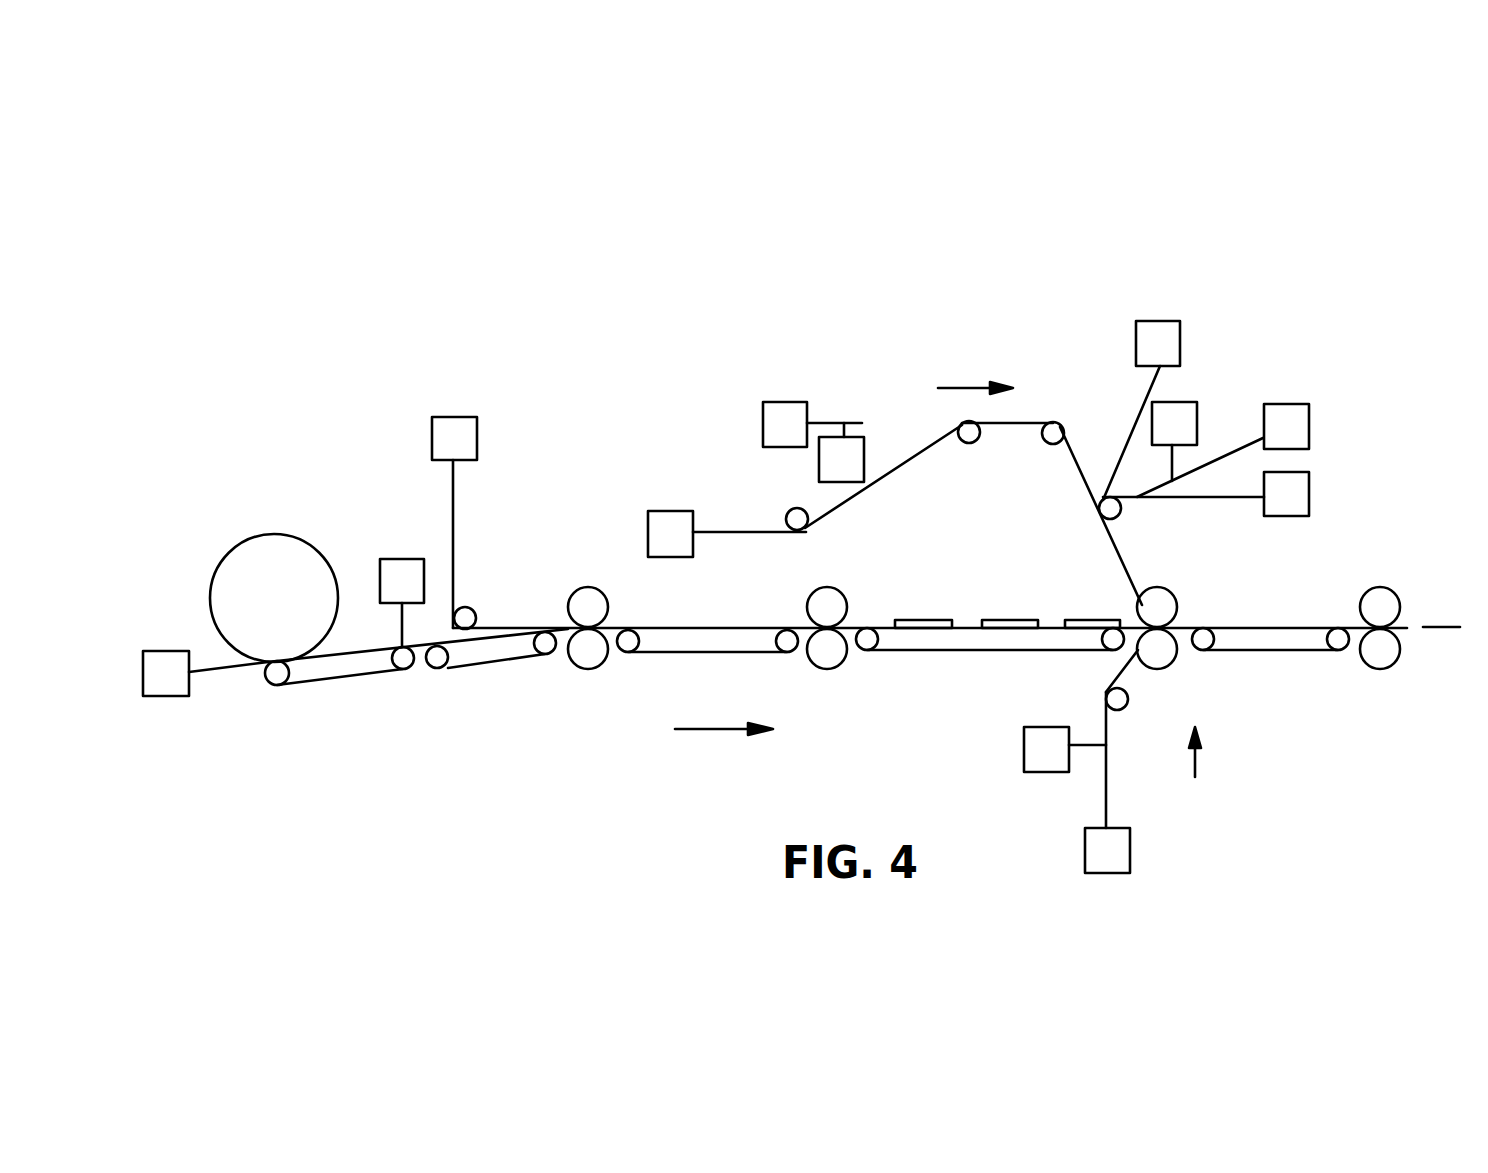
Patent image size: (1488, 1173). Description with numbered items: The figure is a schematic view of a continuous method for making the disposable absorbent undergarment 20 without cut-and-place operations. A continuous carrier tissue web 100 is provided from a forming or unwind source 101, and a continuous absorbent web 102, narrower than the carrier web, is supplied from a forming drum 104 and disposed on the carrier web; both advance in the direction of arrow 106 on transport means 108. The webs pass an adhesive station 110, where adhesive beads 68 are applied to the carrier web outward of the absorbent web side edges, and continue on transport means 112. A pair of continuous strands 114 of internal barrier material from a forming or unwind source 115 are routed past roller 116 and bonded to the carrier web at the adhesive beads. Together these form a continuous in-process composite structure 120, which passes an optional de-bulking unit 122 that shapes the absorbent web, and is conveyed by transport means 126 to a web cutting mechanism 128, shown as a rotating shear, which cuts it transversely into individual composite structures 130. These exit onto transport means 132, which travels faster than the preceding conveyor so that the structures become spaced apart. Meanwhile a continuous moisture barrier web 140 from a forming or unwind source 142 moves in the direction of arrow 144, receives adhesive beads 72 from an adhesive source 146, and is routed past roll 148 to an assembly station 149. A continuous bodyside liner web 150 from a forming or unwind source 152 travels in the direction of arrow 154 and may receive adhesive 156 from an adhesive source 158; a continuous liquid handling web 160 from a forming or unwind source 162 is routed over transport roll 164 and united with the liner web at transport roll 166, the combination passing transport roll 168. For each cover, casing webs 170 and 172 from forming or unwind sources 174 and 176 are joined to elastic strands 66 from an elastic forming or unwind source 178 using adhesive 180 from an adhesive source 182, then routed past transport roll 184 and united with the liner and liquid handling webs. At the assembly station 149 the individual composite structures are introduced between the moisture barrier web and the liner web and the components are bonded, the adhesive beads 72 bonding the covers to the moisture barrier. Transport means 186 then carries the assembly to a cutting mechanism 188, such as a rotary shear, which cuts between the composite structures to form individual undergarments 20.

The undergarment 20 is at (1438, 622).
The elastic strands 66 is at (1252, 432).
The adhesive beads 68 is at (397, 632).
The adhesive beads 72 is at (1090, 747).
The carrier tissue web 100 is at (212, 675).
The forming or unwind source 101 is at (167, 687).
The absorbent web 102 is at (260, 667).
The forming drum 104 is at (235, 545).
The arrow 106 is at (710, 732).
The transport means 108 is at (365, 672).
The adhesive station 110 is at (398, 566).
The transport means 112 is at (500, 658).
The continuous strands 114 is at (455, 530).
The forming or unwind source 115 is at (458, 424).
The roller 116 is at (474, 614).
The composite structure 120 is at (717, 628).
The de-bulking unit 122 is at (590, 668).
The transport means 126 is at (682, 657).
The web cutting mechanism 128 is at (832, 587).
The composite structures 130 is at (945, 620).
The transport means 132 is at (950, 650).
The moisture barrier web 140 is at (1108, 797).
The forming or unwind source 142 is at (1115, 863).
The arrow 144 is at (1197, 765).
The adhesive source 146 is at (1014, 758).
The roll 148 is at (1130, 697).
The assembly station 149 is at (1177, 593).
The bodyside liner web 150 is at (830, 422).
The forming or unwind source 152 is at (780, 412).
The arrow 154 is at (960, 388).
The adhesive 156 is at (860, 428).
The adhesive source 158 is at (862, 463).
The liquid handling web 160 is at (740, 530).
The forming or unwind source 162 is at (663, 521).
The transport roll 164 is at (790, 508).
The transport roll 166 is at (963, 444).
The transport roll 168 is at (1047, 445).
The casing web 170 is at (1212, 500).
The casing web 172 is at (1133, 419).
The forming or unwind source 174 is at (1298, 494).
The forming or unwind source 176 is at (1155, 330).
The elastic forming or unwind source 178 is at (1298, 424).
The adhesive 180 is at (1177, 460).
The adhesive source 182 is at (1180, 400).
The transport roll 184 is at (1118, 516).
The transport means 186 is at (1287, 652).
The cutting mechanism 188 is at (1377, 585).